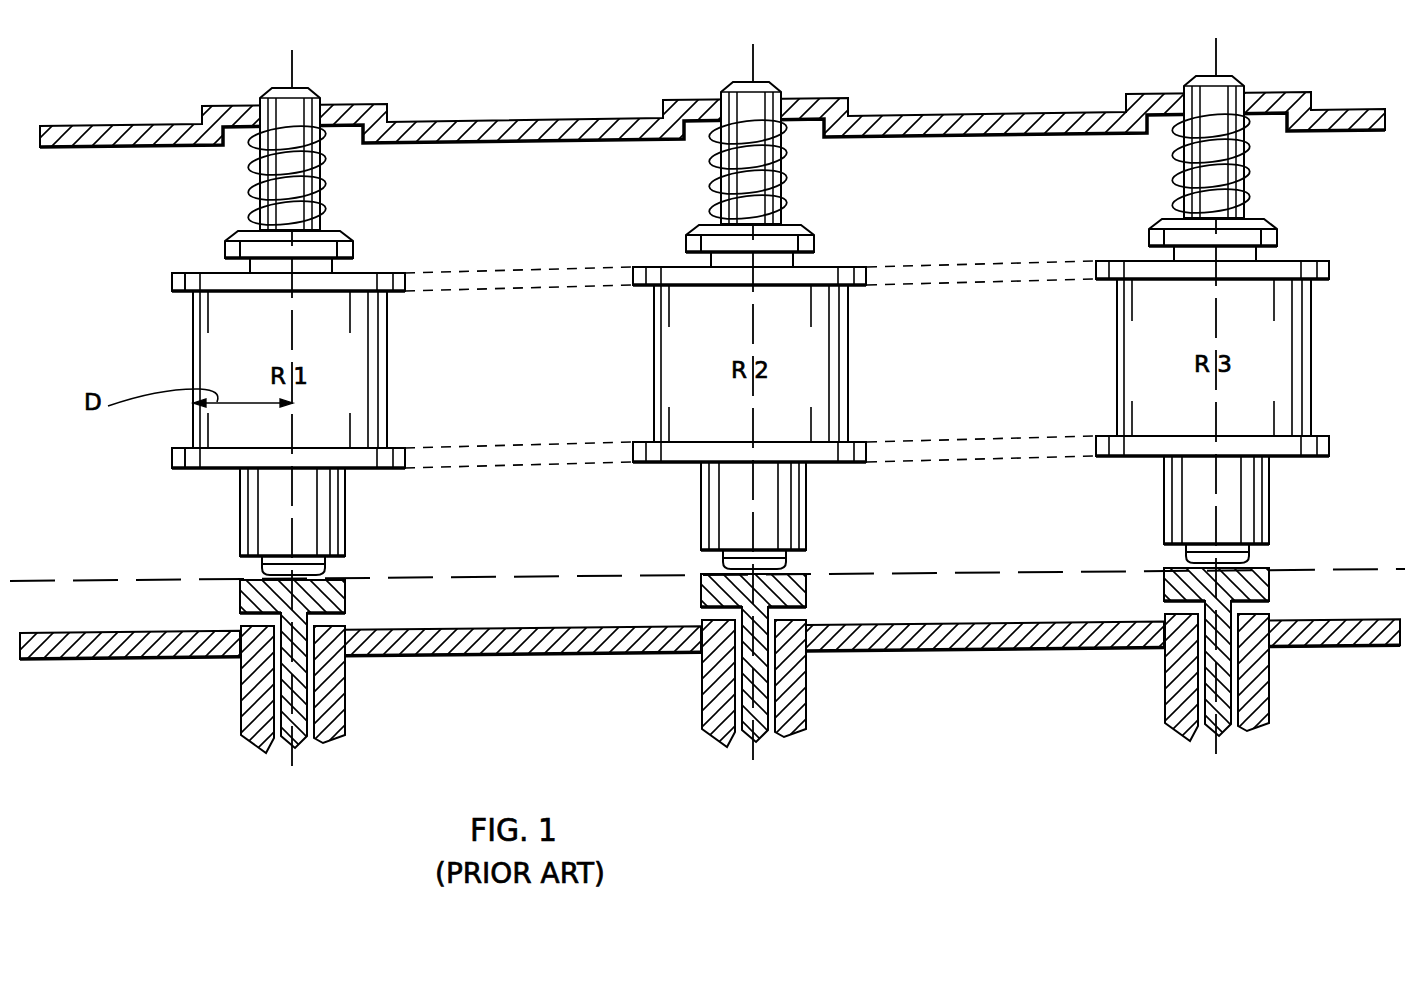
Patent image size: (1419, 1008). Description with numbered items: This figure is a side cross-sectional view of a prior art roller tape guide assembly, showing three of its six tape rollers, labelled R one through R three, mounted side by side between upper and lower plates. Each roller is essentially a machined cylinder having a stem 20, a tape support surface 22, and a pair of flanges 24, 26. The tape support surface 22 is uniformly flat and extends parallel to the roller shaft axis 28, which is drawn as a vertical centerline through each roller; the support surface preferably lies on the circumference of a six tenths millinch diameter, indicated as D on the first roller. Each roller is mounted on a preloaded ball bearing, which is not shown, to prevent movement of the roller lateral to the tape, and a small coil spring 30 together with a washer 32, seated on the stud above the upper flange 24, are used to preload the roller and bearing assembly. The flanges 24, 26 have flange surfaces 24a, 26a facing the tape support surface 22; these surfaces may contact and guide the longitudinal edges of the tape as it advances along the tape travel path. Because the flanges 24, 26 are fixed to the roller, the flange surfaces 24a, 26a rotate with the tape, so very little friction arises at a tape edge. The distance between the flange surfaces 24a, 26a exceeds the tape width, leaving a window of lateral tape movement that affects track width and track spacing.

The stem 20 is at (346, 518).
The tape support surface 22 is at (193, 372).
The flange 24 is at (175, 276).
The flange surface 24a is at (187, 298).
The flange 26 is at (173, 468).
The flange surface 26a is at (186, 448).
The roller shaft axis 28 is at (298, 77).
The coil spring 30 is at (326, 178).
The washer 32 is at (356, 246).